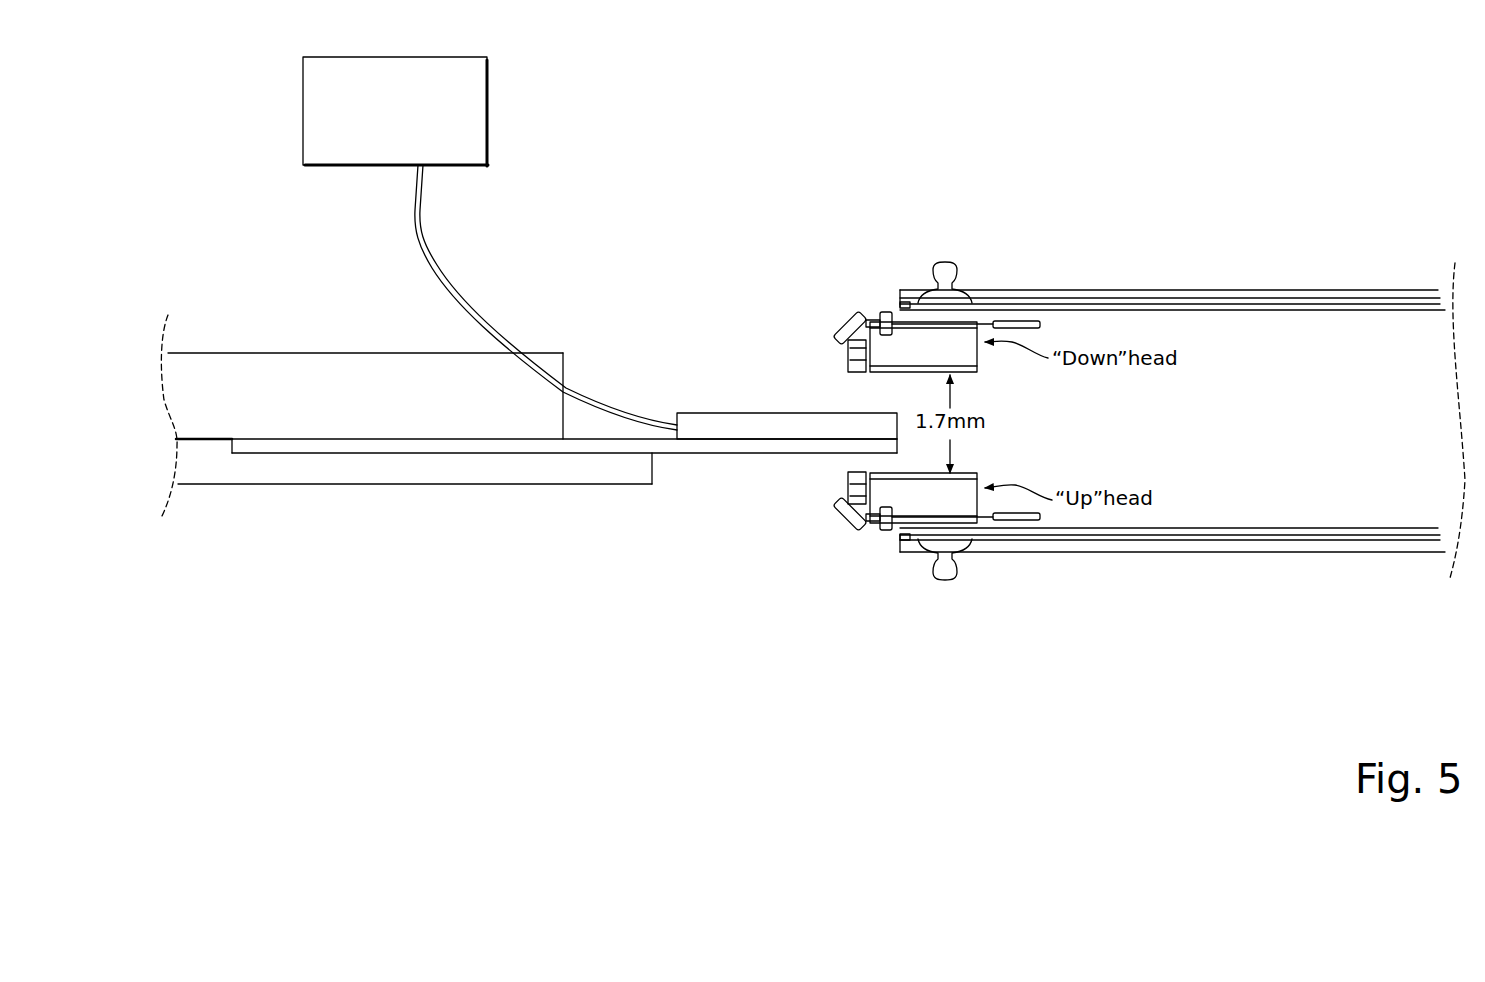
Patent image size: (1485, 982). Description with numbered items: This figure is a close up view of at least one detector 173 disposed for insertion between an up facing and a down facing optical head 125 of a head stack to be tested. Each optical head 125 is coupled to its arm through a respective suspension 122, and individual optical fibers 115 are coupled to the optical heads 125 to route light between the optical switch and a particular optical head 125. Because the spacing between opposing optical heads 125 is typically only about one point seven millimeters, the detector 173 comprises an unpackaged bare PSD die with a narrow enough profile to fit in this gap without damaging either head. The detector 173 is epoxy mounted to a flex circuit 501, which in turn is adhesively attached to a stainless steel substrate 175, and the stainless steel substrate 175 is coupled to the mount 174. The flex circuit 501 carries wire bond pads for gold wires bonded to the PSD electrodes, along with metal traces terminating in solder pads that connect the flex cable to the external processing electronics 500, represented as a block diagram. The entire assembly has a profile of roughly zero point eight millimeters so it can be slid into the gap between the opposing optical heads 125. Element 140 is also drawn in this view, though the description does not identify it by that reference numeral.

The external processing electronics 500 is at (418, 124).
The flex circuit 501 is at (432, 262).
The optical head 125 is at (1179, 364).
The optical fiber 115 is at (1040, 318).
The connector 140 is at (837, 322).
The detector 173 is at (695, 428).
The mount 174 is at (208, 465).
The stainless steel substrate 175 is at (750, 460).
The suspension 122 is at (1122, 555).